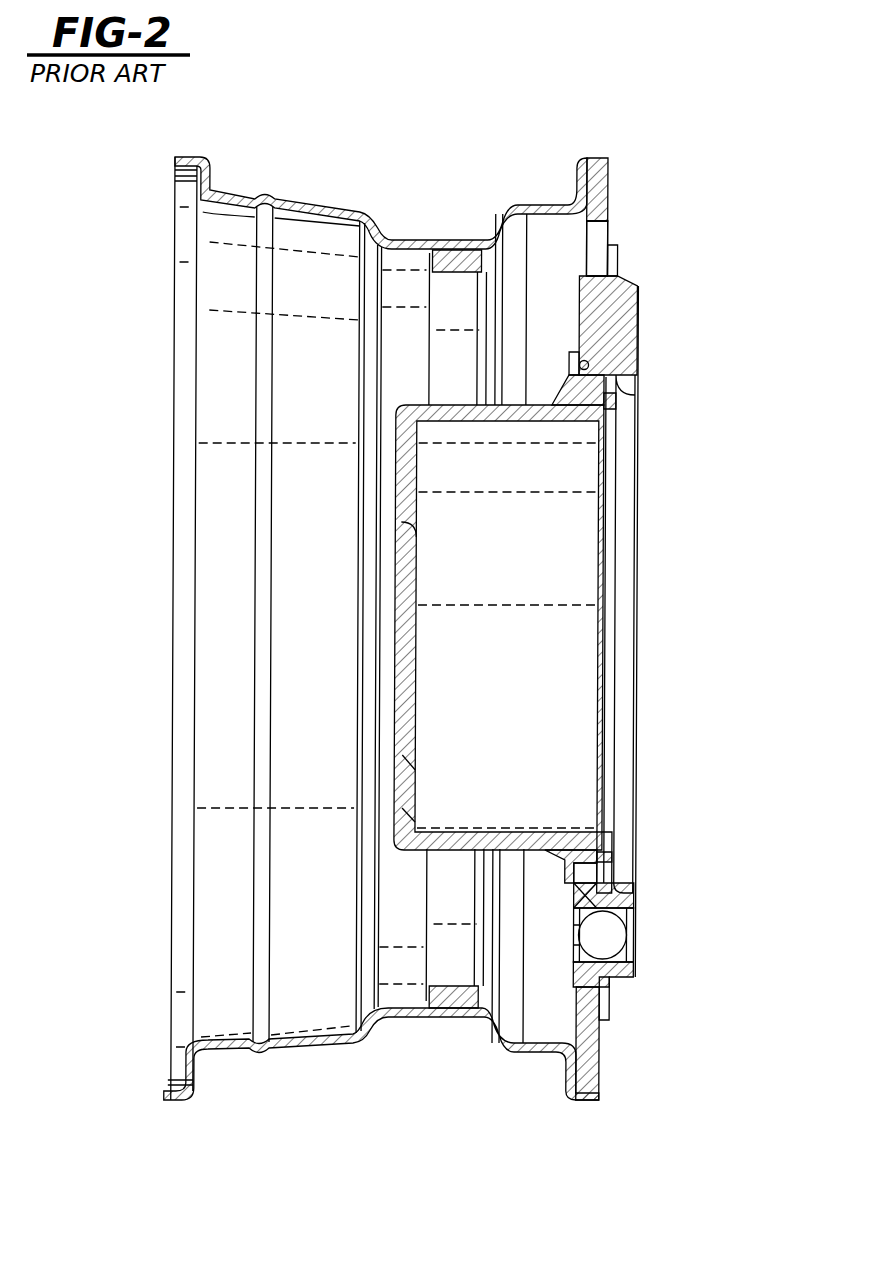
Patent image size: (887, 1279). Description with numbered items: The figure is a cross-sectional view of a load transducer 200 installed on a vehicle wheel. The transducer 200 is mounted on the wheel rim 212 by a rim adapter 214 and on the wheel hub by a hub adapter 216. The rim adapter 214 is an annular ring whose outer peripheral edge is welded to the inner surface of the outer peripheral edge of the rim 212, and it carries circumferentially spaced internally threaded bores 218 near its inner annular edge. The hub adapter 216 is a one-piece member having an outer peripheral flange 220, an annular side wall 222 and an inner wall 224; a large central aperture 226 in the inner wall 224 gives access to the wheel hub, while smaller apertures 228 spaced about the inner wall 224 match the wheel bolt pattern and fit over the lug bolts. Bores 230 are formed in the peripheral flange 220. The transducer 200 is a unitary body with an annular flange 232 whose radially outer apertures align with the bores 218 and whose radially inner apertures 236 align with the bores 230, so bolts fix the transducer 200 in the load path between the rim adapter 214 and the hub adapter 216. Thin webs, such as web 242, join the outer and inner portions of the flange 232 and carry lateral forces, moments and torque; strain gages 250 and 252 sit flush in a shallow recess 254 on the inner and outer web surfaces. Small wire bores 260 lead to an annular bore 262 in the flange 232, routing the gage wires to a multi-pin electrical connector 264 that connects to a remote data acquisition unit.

The load transducer 200 is at (625, 230).
The wheel rim 212 is at (393, 232).
The rim adapter 214 is at (613, 182).
The hub adapter 216 is at (590, 425).
The internally threaded bores 218 is at (580, 250).
The outer peripheral flange 220 is at (638, 870).
The annular side wall 222 is at (527, 840).
The inner wall 224 is at (408, 763).
The central aperture 226 is at (408, 535).
The apertures 228 is at (407, 815).
The bores 230 is at (582, 870).
The annular flange 232 is at (618, 258).
The radially inner apertures 236 is at (620, 870).
The web 242 is at (640, 970).
The strain gage 250 is at (637, 940).
The strain gage 252 is at (577, 933).
The shallow recess 254 is at (637, 917).
The wire bores 260 is at (638, 895).
The annular bore 262 is at (620, 377).
The electrical connector 264 is at (640, 333).